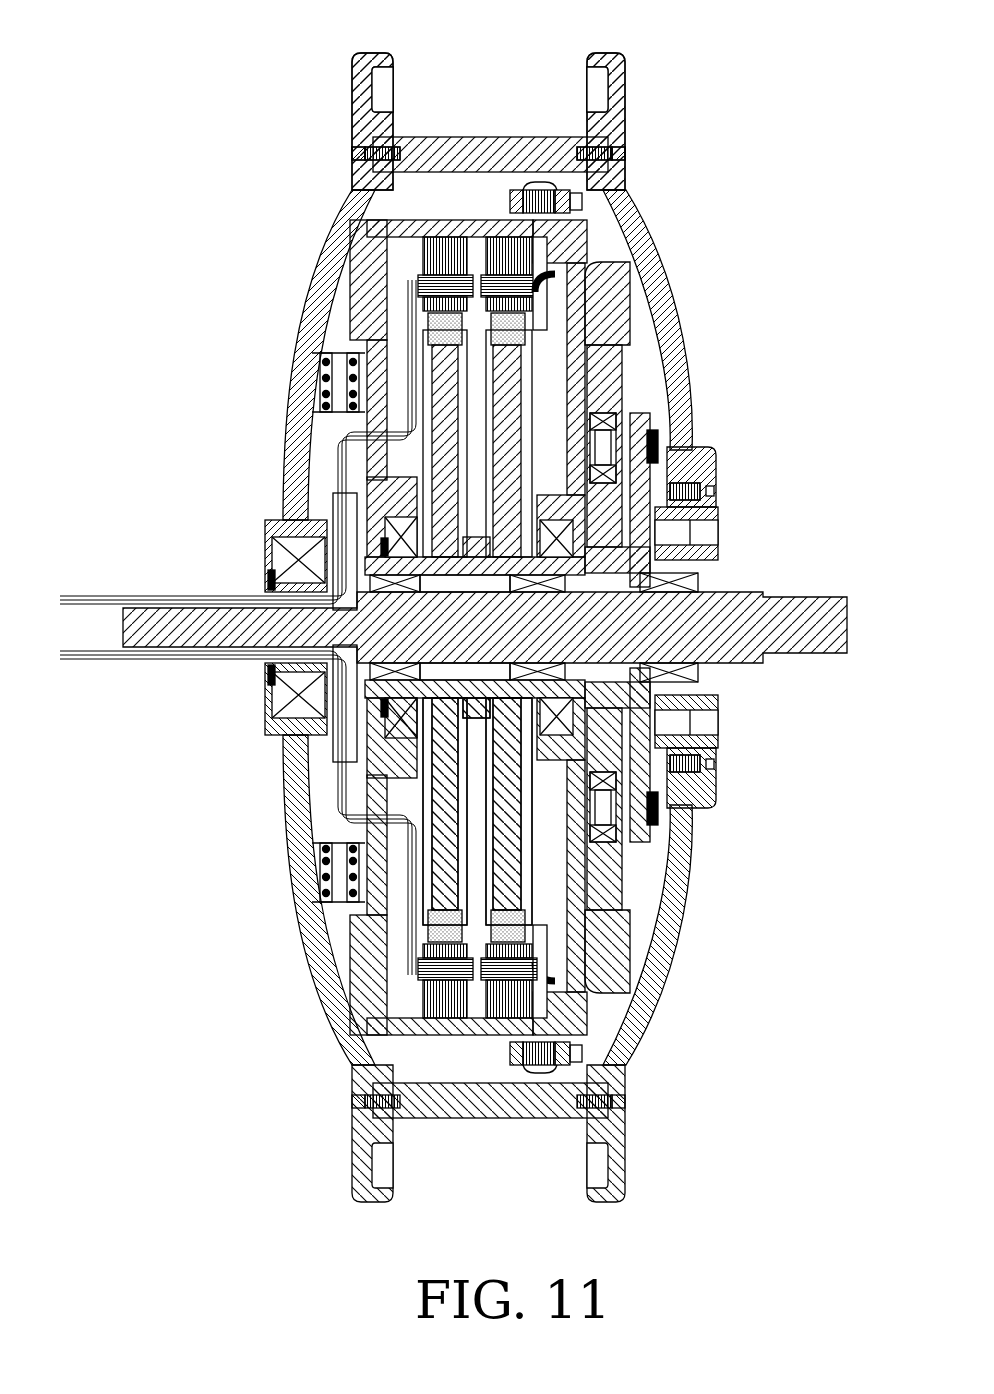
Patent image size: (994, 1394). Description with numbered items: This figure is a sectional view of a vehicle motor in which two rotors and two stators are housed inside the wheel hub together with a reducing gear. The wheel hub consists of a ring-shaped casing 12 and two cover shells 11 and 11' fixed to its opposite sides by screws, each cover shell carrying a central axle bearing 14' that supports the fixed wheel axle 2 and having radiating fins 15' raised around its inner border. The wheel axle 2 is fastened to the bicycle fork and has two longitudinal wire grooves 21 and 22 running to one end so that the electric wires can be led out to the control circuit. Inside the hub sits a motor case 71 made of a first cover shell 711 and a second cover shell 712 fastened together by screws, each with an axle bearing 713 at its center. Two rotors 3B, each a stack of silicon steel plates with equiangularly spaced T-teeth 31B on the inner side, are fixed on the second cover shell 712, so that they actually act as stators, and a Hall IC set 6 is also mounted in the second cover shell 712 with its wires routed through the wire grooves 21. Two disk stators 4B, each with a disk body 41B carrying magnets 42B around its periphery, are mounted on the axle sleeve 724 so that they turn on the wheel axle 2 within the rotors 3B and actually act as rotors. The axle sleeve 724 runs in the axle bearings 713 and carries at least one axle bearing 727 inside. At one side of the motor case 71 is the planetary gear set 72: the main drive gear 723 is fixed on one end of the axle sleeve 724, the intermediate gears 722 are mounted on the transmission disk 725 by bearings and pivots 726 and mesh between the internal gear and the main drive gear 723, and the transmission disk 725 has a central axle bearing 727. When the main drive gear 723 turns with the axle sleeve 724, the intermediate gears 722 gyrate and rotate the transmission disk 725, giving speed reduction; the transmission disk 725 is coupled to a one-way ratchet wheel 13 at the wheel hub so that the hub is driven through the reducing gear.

The wheel axle 2 is at (828, 612).
The Hall IC set 6 is at (628, 262).
The cover shell 11 is at (600, 95).
The cover shell 11' is at (350, 101).
The ring-shaped casing 12 is at (483, 150).
The one-way ratchet wheel 13 is at (690, 530).
The axle bearing 14' is at (265, 703).
The radiating fins 15' is at (294, 627).
The longitudinal wire groove 21 is at (155, 596).
The longitudinal wire groove 22 is at (162, 660).
The rotor 3B is at (395, 1037).
The T-teeth 31B is at (437, 993).
The disk stator 4B is at (408, 790).
The disk body 41B is at (440, 828).
The magnets 42B is at (433, 927).
The motor case 71 is at (378, 232).
The first cover shell 711 is at (385, 249).
The second cover shell 712 is at (582, 298).
The axle bearing 713 is at (535, 530).
The planetary gear set 72 is at (598, 292).
The intermediate gears 722 is at (610, 380).
The main drive gear 723 is at (700, 492).
The axle sleeve 724 is at (715, 693).
The transmission disk 725 is at (642, 480).
The pivot 726 is at (652, 442).
The axle bearing 727 is at (692, 580).